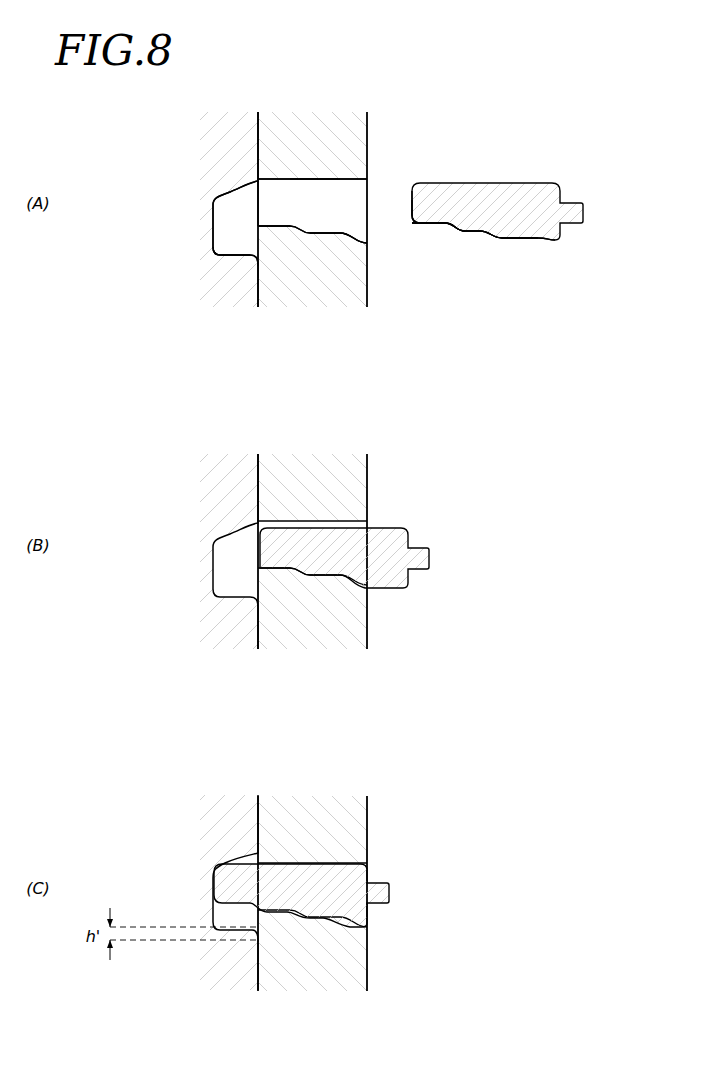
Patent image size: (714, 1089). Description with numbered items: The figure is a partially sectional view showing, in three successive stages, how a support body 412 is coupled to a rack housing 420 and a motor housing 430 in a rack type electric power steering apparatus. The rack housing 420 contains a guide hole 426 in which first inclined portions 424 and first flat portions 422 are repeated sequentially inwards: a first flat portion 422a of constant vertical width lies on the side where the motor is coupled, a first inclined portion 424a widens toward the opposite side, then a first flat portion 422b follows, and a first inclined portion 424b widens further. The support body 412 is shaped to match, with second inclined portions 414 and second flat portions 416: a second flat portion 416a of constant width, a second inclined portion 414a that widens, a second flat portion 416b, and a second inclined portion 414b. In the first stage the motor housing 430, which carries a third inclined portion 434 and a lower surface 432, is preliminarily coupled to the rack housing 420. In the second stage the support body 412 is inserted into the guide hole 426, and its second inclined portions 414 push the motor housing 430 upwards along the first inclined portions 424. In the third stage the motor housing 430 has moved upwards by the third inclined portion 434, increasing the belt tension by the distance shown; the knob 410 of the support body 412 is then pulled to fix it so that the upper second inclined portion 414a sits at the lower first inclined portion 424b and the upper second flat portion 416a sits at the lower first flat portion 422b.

The knob 410 is at (418, 904).
The support body 412 is at (318, 873).
The second inclined portions 414 is at (301, 916).
The second inclined portion 414a is at (485, 232).
The second inclined portion 414b is at (533, 243).
The second flat portions 416 is at (228, 927).
The second flat portion 416a is at (430, 222).
The second flat portion 416b is at (472, 232).
The rack housing 420 is at (278, 812).
The first flat portions 422 is at (370, 378).
The first flat portion 422a is at (276, 240).
The first flat portion 422b is at (342, 231).
The first inclined portions 424 is at (368, 864).
The first inclined portion 424a is at (300, 232).
The first inclined portion 424b is at (343, 240).
The guide hole 426 is at (366, 932).
The motor housing 430 is at (227, 811).
The bottom surface of protrusion 432 is at (215, 930).
The third inclined portion 434 is at (236, 862).